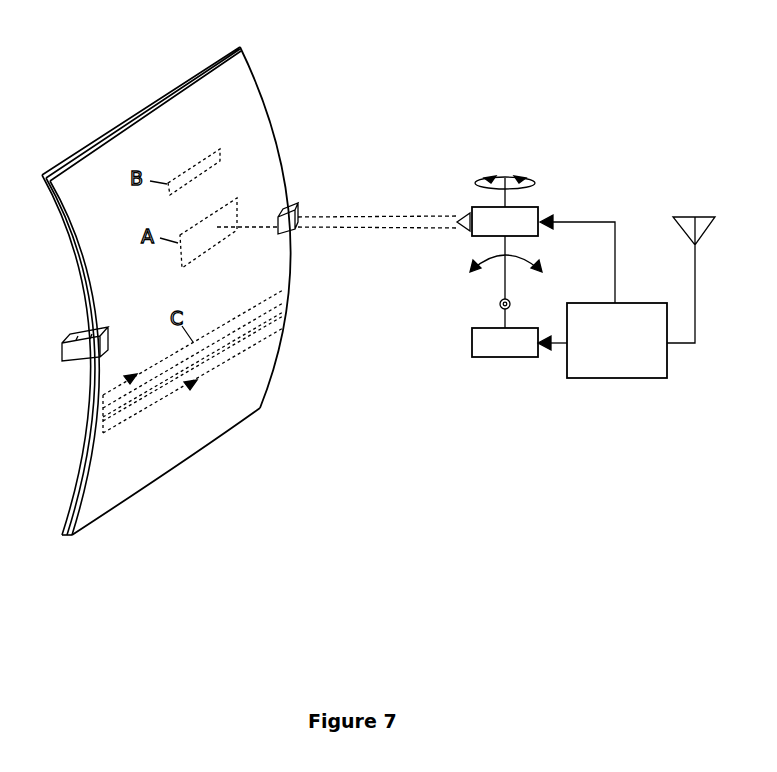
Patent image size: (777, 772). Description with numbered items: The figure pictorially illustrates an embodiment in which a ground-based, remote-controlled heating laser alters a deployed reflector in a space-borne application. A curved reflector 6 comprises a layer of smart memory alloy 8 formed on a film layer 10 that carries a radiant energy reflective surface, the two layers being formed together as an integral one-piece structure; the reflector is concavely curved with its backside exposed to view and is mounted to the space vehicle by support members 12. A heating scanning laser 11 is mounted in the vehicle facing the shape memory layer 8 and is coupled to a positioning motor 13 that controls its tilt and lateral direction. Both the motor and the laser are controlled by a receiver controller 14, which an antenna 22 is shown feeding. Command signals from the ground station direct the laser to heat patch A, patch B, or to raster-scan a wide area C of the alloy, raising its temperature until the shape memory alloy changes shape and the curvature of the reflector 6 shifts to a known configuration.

The curved reflector 6 is at (176, 76).
The layer of smart memory alloy 8 is at (246, 104).
The film layer 10 is at (67, 247).
The heating scanning laser 11 is at (540, 206).
The support members 12 is at (62, 351).
The positioning motor 13 is at (490, 358).
The receiver controller 14 is at (605, 380).
The antenna 22 is at (684, 214).